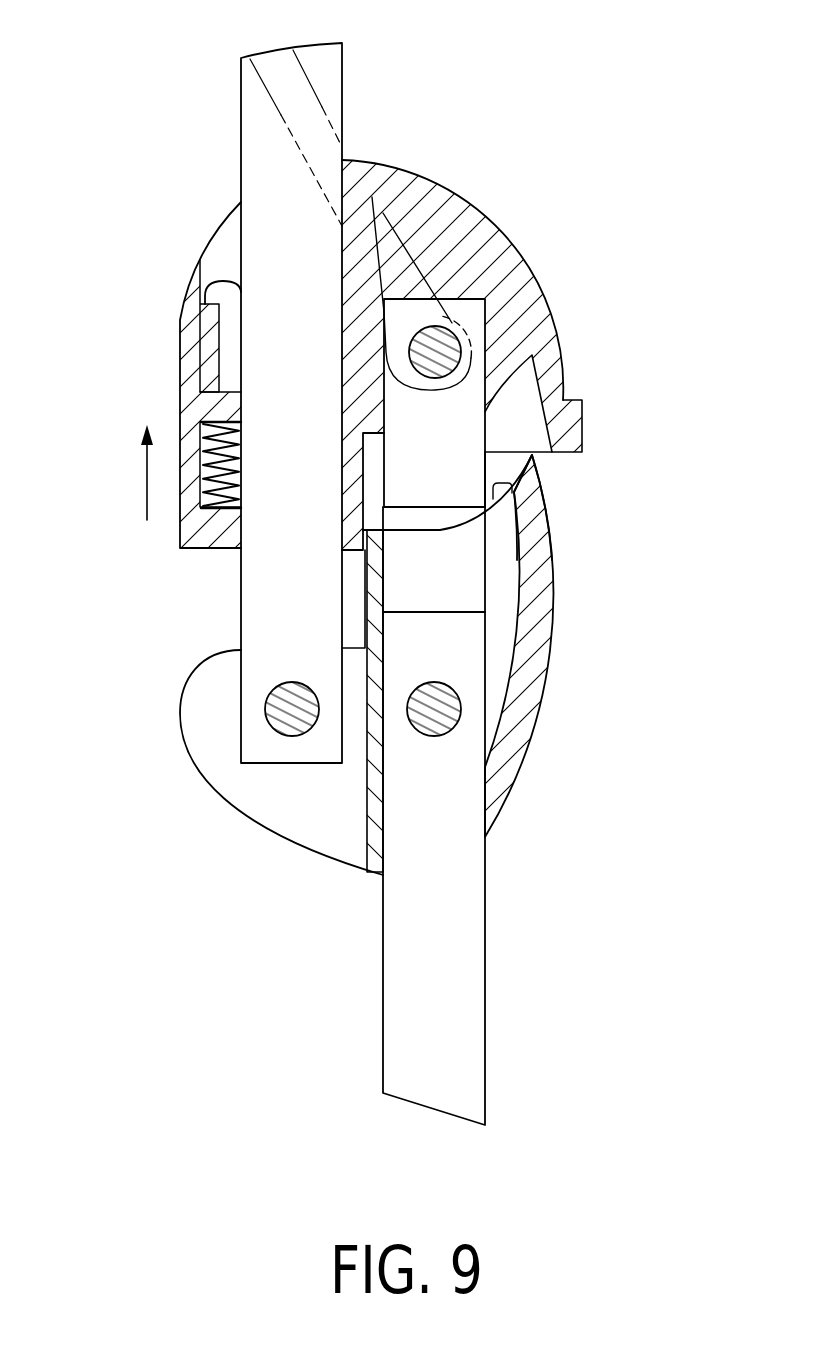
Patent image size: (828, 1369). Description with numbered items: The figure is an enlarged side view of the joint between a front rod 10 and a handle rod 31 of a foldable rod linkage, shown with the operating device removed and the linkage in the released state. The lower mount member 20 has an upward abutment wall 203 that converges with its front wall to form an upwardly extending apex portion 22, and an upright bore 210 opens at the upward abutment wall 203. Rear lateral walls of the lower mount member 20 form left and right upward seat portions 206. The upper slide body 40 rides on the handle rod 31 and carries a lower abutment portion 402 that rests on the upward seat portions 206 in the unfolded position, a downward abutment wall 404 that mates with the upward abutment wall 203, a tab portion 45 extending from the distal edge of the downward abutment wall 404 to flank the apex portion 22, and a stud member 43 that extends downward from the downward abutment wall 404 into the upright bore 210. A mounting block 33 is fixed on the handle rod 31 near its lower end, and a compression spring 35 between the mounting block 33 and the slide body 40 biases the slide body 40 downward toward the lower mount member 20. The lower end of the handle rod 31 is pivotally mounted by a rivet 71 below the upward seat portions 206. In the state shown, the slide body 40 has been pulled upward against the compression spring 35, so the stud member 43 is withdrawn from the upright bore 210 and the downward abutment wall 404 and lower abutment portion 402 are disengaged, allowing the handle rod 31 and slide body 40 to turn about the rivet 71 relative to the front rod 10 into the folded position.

The front rod 10 is at (485, 992).
The lower mount member 20 is at (540, 720).
The apex portion 22 is at (530, 475).
The upward abutment wall 203 is at (512, 487).
The upward seat portions 206 is at (240, 650).
The upright bore 210 is at (431, 578).
The handle rod 31 is at (343, 88).
The mounting block 33 is at (227, 295).
The compression spring 35 is at (202, 428).
The upper slide body 40 is at (480, 208).
The lower abutment portion 402 is at (192, 533).
The downward abutment wall 404 is at (485, 412).
The stud member 43 is at (440, 440).
The tab portion 45 is at (582, 425).
The rivet 71 is at (282, 737).